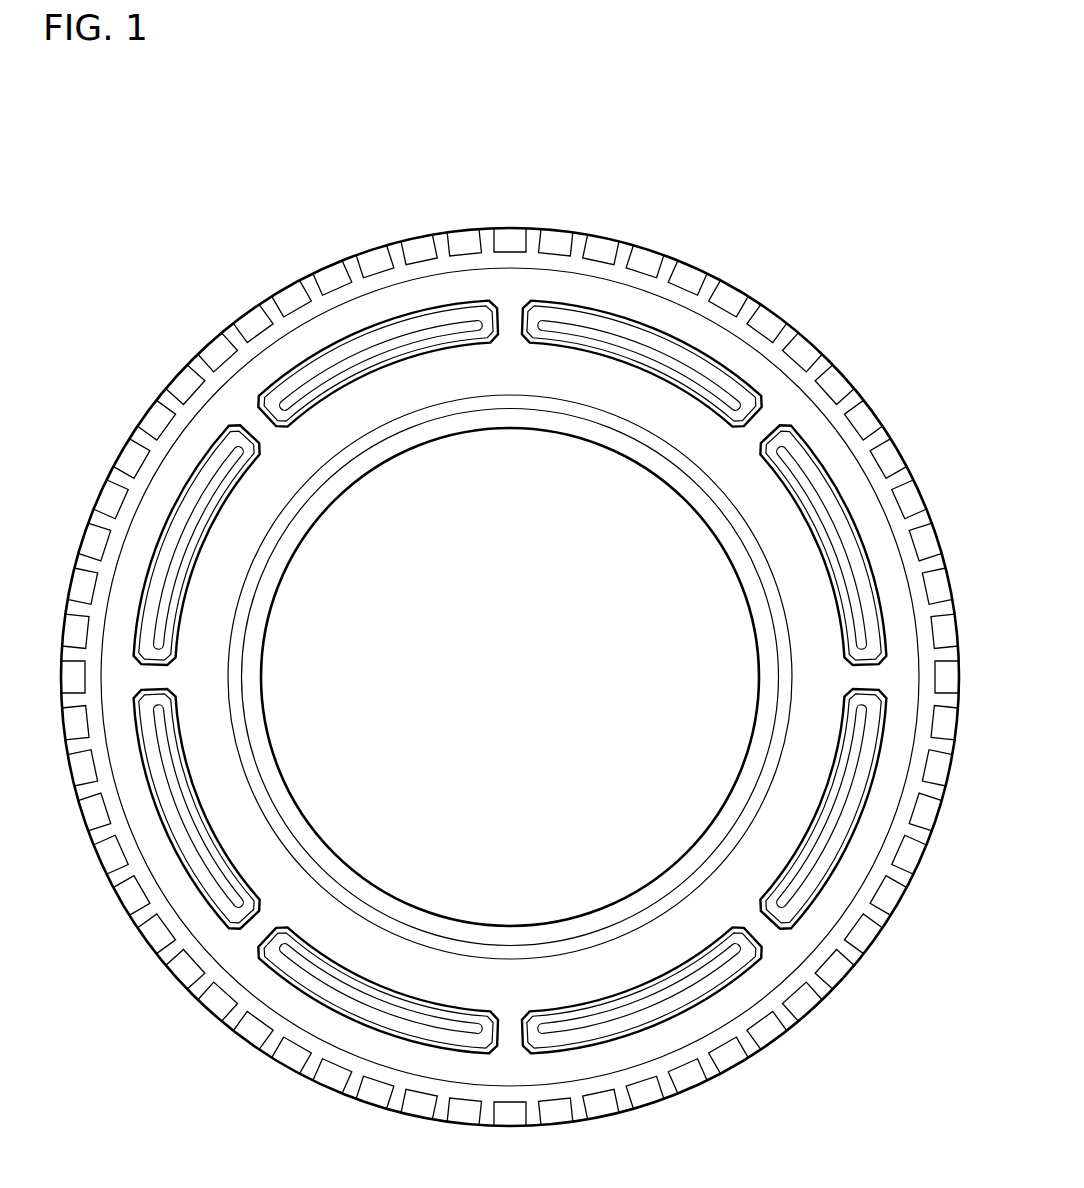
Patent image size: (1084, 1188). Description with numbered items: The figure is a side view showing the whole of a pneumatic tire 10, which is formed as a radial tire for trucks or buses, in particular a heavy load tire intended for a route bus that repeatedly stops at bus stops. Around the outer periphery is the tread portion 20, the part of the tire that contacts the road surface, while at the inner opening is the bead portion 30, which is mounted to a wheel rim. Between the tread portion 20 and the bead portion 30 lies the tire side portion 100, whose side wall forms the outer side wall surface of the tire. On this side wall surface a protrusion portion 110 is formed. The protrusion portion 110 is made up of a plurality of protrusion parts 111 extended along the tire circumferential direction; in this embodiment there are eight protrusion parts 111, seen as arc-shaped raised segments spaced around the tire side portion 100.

The pneumatic tire 10 is at (518, 642).
The tread portion 20 is at (813, 346).
The bead portion 30 is at (717, 832).
The tire side portion 100 is at (783, 524).
The protrusion portion 110 is at (457, 294).
The protrusion part 111 is at (838, 518).